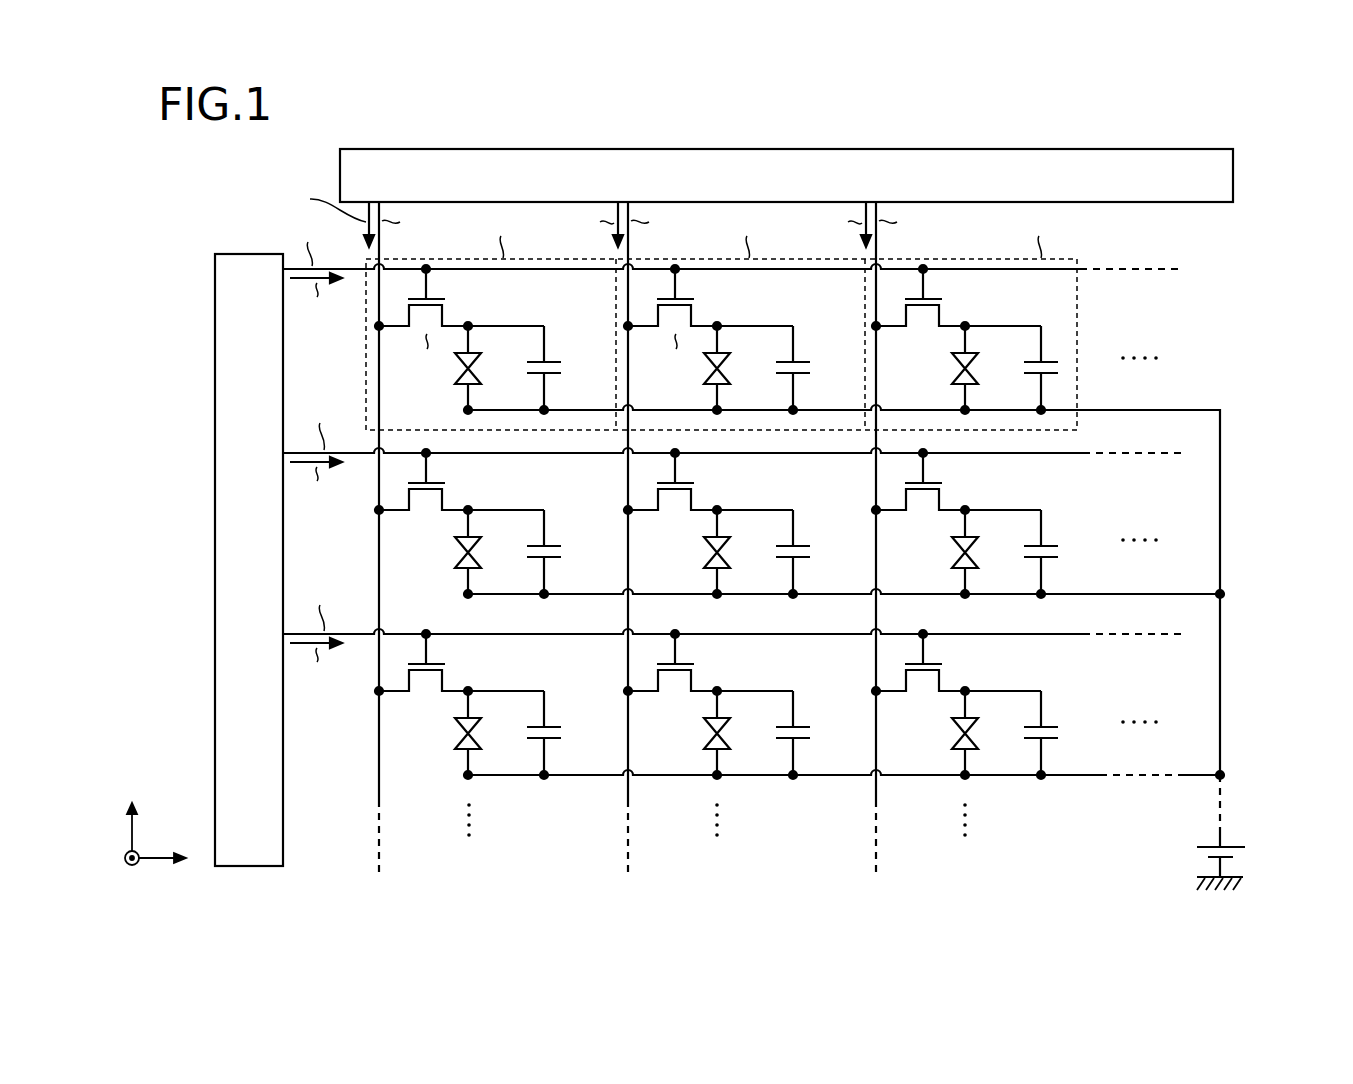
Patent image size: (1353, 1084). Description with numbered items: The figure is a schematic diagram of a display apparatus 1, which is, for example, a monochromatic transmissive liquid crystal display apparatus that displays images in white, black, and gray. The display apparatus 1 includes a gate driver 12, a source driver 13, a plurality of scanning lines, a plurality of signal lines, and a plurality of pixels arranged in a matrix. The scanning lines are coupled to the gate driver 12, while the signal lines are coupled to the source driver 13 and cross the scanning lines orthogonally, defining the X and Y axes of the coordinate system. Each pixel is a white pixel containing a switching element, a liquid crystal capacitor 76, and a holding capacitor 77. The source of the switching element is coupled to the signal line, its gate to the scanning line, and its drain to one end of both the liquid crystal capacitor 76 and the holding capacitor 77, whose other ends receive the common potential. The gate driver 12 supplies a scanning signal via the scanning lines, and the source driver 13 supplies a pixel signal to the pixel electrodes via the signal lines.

The display apparatus 1 is at (1172, 128).
The gate driver 12 is at (235, 264).
The source driver 13 is at (1228, 173).
The liquid crystal capacitor 76 is at (482, 372).
The holding capacitor 77 is at (563, 372).